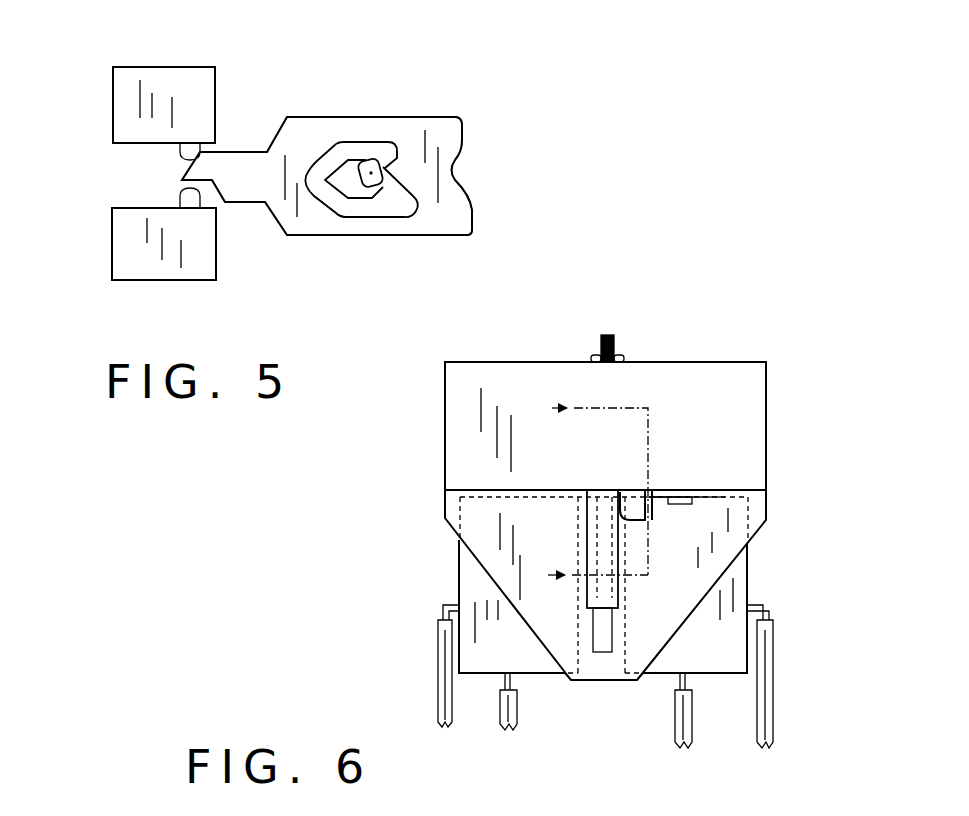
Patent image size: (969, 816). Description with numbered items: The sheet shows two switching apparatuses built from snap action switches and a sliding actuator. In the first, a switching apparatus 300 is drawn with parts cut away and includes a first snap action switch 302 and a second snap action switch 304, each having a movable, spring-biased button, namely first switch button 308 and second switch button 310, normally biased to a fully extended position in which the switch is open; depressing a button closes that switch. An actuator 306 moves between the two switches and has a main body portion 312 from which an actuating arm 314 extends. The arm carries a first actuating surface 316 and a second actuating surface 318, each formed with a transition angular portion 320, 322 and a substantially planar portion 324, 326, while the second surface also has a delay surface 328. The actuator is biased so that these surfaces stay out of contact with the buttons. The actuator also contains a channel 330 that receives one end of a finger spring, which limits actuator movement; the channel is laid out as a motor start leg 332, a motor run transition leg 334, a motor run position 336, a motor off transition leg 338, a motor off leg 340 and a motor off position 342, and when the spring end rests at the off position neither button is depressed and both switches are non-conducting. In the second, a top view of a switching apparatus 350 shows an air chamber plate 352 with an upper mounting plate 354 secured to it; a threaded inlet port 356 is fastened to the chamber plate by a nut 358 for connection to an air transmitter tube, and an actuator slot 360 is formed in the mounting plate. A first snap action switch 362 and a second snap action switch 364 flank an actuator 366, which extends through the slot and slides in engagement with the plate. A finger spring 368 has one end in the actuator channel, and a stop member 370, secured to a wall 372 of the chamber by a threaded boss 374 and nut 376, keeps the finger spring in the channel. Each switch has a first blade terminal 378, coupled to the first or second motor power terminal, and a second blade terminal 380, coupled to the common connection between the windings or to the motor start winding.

In FIG. 5, the switching apparatus 300 is at (355, 80).
In FIG. 5, the first snap action switch 302 is at (153, 80).
In FIG. 5, the second snap action switch 304 is at (135, 272).
In FIG. 5, the actuator 306 is at (385, 240).
In FIG. 5, the first switch button 308 is at (180, 147).
In FIG. 5, the second switch button 310 is at (180, 200).
In FIG. 5, the main body portion 312 is at (445, 225).
In FIG. 5, the actuating arm 314 is at (235, 163).
In FIG. 5, the first actuating surface 316 is at (229, 148).
In FIG. 5, the second actuating surface 318 is at (238, 206).
In FIG. 5, the transition angular portion 320 is at (180, 174).
In FIG. 5, the transition angular portion 322 is at (210, 198).
In FIG. 5, the substantially planar portion 324 is at (257, 152).
In FIG. 5, the substantially planar portion 326 is at (255, 205).
In FIG. 5, the delay surface 328 is at (180, 189).
In FIG. 5, the channel 330 is at (402, 140).
In FIG. 5, the motor start leg 332 is at (347, 207).
In FIG. 5, the motor run transition leg 334 is at (405, 202).
In FIG. 5, the motor run position 336 is at (385, 170).
In FIG. 5, the motor off transition leg 338 is at (375, 172).
In FIG. 5, the motor off leg 340 is at (352, 157).
In FIG. 5, the motor off position 342 is at (315, 182).
In FIG. 6, the switching apparatus 350 is at (708, 322).
In FIG. 6, the air chamber plate 352 is at (752, 418).
In FIG. 6, the upper mounting plate 354 is at (766, 503).
In FIG. 6, the threaded inlet port 356 is at (615, 342).
In FIG. 6, the nut 358 is at (593, 358).
In FIG. 6, the actuator slot 360 is at (603, 635).
In FIG. 6, the first snap action switch 362 is at (475, 588).
In FIG. 6, the second snap action switch 364 is at (727, 595).
In FIG. 6, the actuator 366 is at (614, 560).
In FIG. 6, the finger spring 368 is at (615, 493).
In FIG. 6, the stop member 370 is at (660, 510).
In FIG. 6, the wall 372 is at (725, 500).
In FIG. 6, the threaded boss 374 is at (709, 497).
In FIG. 6, the nut 376 is at (672, 495).
In FIG. 6, the first blade terminal 378 is at (510, 682).
In FIG. 6, the second blade terminal 380 is at (440, 611).